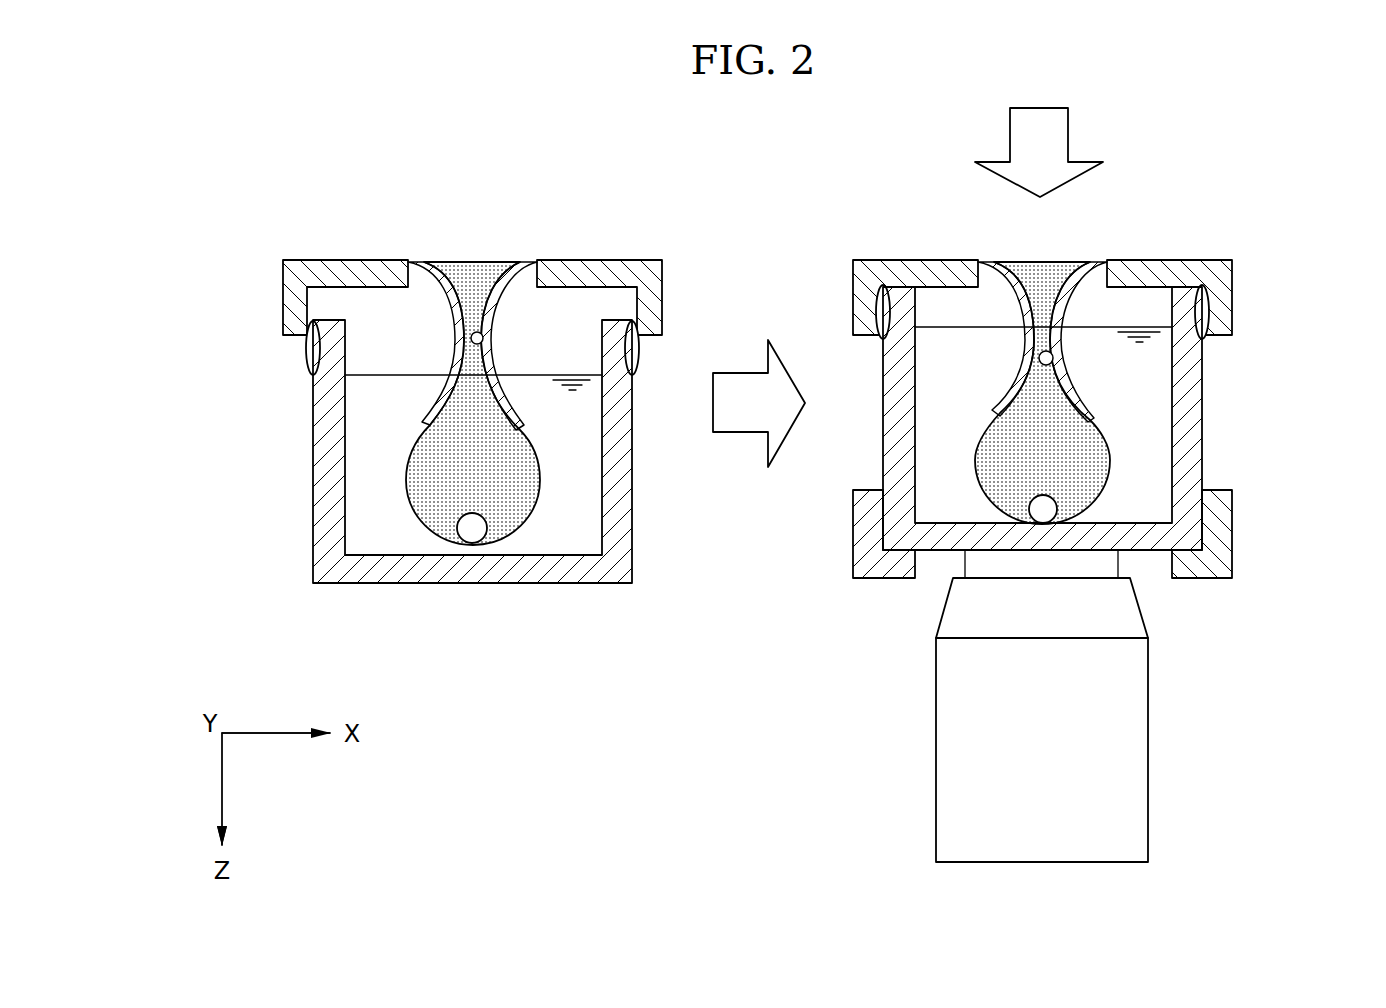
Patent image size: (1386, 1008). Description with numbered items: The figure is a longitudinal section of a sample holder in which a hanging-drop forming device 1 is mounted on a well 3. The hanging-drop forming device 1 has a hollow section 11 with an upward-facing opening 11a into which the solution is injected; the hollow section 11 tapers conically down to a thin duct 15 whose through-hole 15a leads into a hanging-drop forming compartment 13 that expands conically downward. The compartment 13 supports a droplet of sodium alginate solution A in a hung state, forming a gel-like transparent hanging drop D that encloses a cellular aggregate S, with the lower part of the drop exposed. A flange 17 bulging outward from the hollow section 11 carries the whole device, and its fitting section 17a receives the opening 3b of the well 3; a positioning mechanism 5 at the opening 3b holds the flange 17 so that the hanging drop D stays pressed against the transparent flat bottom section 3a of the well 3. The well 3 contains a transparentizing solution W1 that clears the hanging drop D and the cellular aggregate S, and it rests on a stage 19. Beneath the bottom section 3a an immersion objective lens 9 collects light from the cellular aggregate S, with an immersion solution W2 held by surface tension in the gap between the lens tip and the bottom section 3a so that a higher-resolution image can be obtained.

The hanging-drop forming device 1 is at (312, 225).
The well 3 is at (310, 555).
The bottom section 3a is at (517, 585).
The opening 3b is at (345, 340).
The positioning mechanism 5 is at (282, 348).
The objective lens 9 is at (915, 727).
The hollow section 11 is at (414, 262).
The opening 11a is at (500, 272).
The hanging-drop forming compartment 13 is at (449, 398).
The duct 15 is at (458, 346).
The through-hole 15a is at (485, 338).
The flange 17 is at (588, 270).
The fitting section 17a is at (650, 297).
The stage 19 is at (310, 358).
The sodium alginate solution A is at (427, 507).
The hanging drop D is at (538, 505).
The cellular aggregate S is at (472, 535).
The transparentizing solution W1 is at (365, 472).
The immersion solution W2 is at (972, 563).